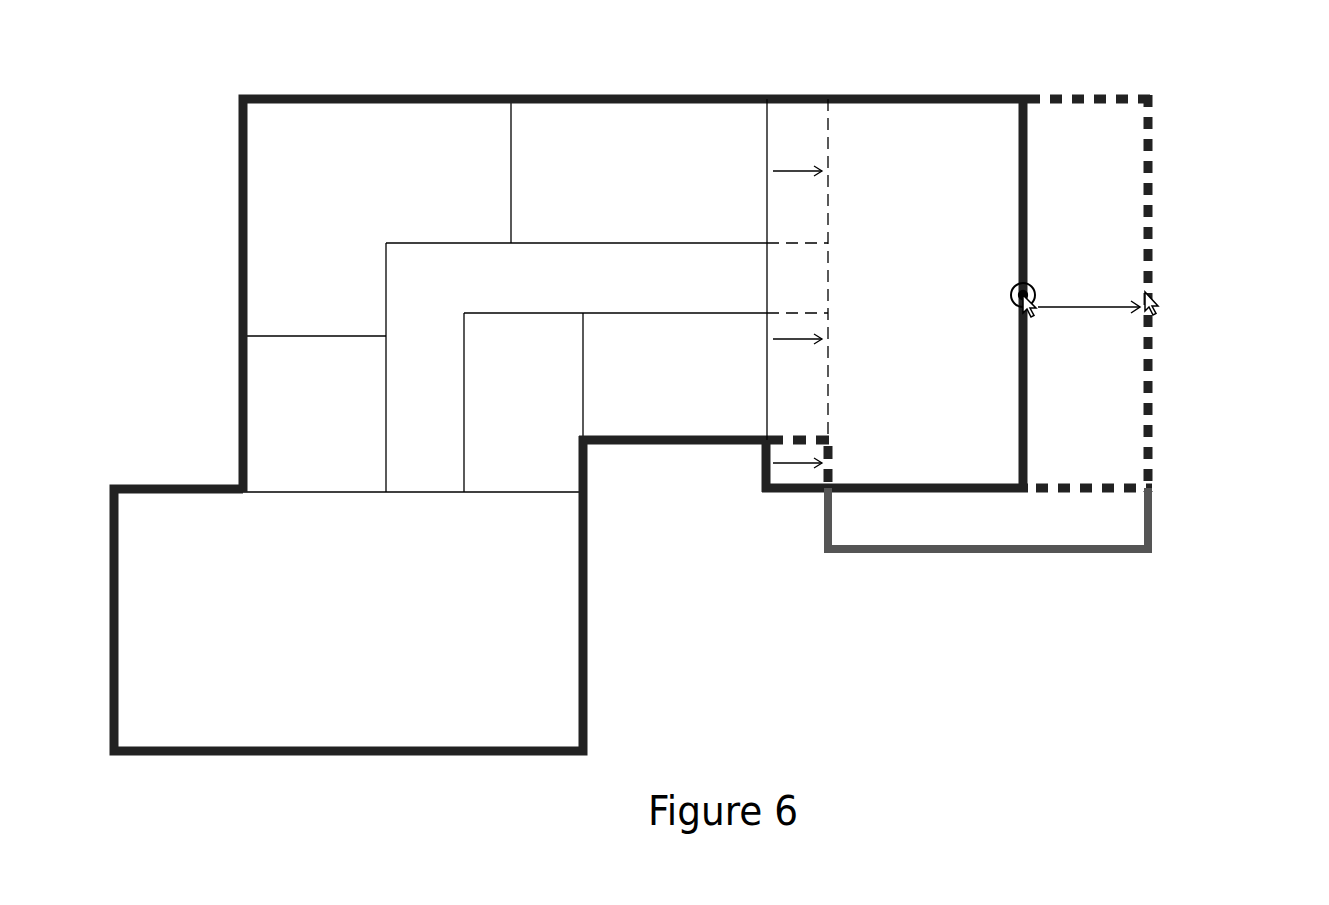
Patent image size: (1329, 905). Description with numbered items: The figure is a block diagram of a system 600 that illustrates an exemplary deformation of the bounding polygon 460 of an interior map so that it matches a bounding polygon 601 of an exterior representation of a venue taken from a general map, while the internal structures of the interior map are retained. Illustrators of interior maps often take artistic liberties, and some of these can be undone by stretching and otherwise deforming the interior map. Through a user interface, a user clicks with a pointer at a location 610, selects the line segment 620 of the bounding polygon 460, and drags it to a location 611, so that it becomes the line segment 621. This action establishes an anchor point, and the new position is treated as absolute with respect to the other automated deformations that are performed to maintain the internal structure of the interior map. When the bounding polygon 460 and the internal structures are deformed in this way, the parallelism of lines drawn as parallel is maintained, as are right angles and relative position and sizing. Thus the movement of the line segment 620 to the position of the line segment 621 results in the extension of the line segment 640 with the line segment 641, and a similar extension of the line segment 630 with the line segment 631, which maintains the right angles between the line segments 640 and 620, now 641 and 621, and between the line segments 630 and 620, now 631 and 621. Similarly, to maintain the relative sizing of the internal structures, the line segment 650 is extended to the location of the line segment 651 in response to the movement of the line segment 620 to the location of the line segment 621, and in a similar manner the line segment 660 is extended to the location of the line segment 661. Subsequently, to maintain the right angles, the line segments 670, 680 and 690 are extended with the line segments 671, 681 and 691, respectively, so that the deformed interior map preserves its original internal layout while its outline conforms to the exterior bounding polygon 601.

The system 600 is at (1190, 83).
The bounding polygon of an exterior representation of a venue 601 is at (923, 552).
The location 610 is at (1043, 282).
The location 611 is at (1158, 293).
The line segment 620 is at (1026, 192).
The line segment 621 is at (1146, 340).
The line segment 630 is at (878, 486).
The line segment 631 is at (1121, 486).
The line segment 640 is at (882, 100).
The line segment 641 is at (1125, 101).
The line segment 650 is at (767, 118).
The line segment 651 is at (828, 138).
The line segment 660 is at (766, 469).
The line segment 661 is at (828, 482).
The line segment 670 is at (668, 242).
The line segment 671 is at (802, 244).
The line segment 680 is at (665, 312).
The line segment 681 is at (803, 314).
The line segment 690 is at (634, 440).
The line segment 691 is at (797, 437).
The bounding polygon 460 is at (587, 592).